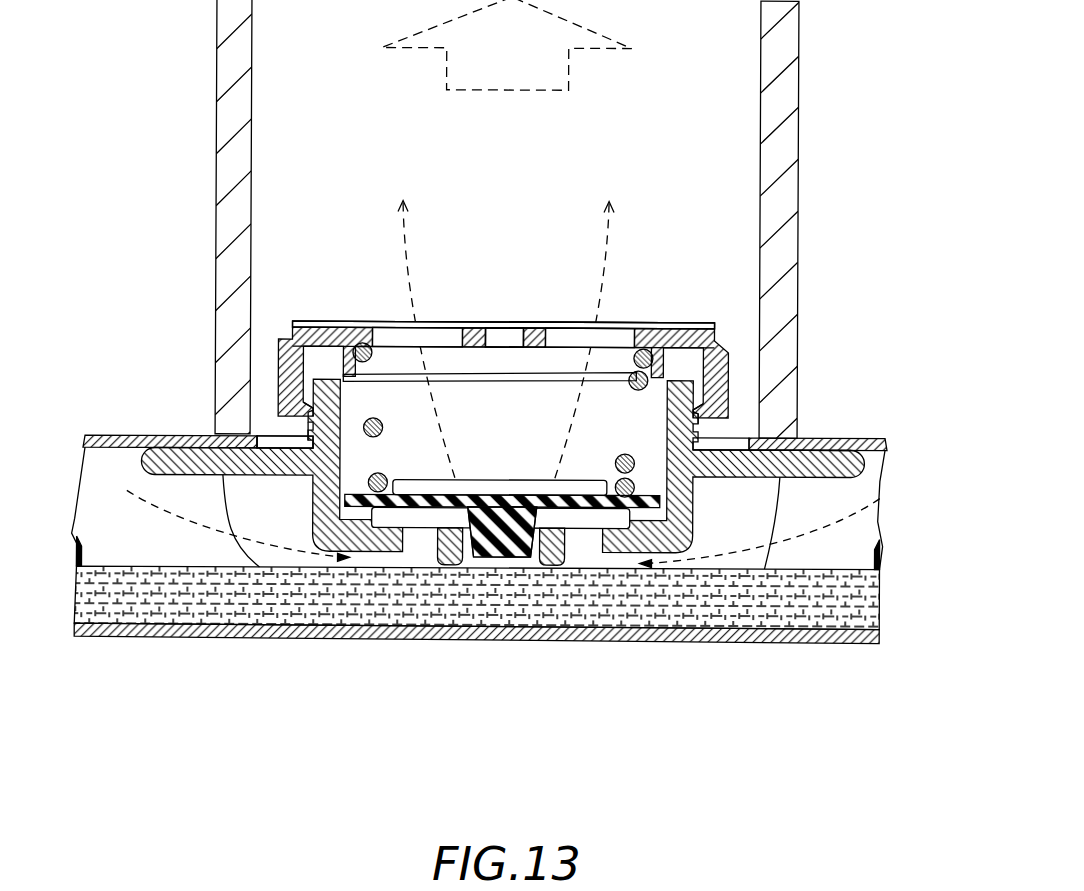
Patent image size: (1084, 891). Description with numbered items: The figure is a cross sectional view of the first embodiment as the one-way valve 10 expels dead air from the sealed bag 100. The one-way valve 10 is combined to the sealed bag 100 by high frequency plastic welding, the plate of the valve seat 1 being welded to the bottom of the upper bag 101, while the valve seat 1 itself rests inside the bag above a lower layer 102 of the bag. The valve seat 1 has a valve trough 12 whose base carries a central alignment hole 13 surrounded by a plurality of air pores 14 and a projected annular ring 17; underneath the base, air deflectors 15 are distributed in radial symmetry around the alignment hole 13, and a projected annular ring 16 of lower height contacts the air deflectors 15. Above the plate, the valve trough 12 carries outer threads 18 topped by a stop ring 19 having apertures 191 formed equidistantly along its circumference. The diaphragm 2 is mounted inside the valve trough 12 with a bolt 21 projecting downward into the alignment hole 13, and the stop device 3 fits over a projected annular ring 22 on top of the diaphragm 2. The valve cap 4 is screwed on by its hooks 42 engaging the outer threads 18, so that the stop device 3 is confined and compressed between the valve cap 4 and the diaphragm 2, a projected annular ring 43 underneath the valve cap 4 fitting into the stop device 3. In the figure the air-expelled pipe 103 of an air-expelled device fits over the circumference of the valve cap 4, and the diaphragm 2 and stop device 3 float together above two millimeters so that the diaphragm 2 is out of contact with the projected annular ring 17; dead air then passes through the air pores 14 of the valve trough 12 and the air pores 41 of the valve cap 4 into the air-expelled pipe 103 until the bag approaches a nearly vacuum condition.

The valve seat 1 is at (825, 437).
The diaphragm 2 is at (692, 440).
The stop device 3 is at (668, 337).
The valve cap 4 is at (697, 327).
The one-way valve 10 is at (818, 316).
The valve trough 12 is at (342, 433).
The central alignment hole 13 is at (538, 553).
The air pores 14 is at (595, 543).
The air deflectors 15 is at (757, 500).
The projected annular ring 16 is at (552, 553).
The projected annular ring 17 is at (257, 443).
The outer threads 18 is at (308, 432).
The stop ring 19 is at (290, 345).
The bolt 21 is at (483, 550).
The projected annular ring 22 is at (437, 487).
The air pores 41 is at (628, 337).
The hooks 42 is at (697, 407).
The projected annular ring 43 is at (607, 355).
The sealed bag 100 is at (108, 418).
The upper bag 101 is at (848, 443).
The bottom plate 102 is at (810, 642).
The air-expelled pipe 103 is at (778, 53).
The apertures 191 is at (305, 392).